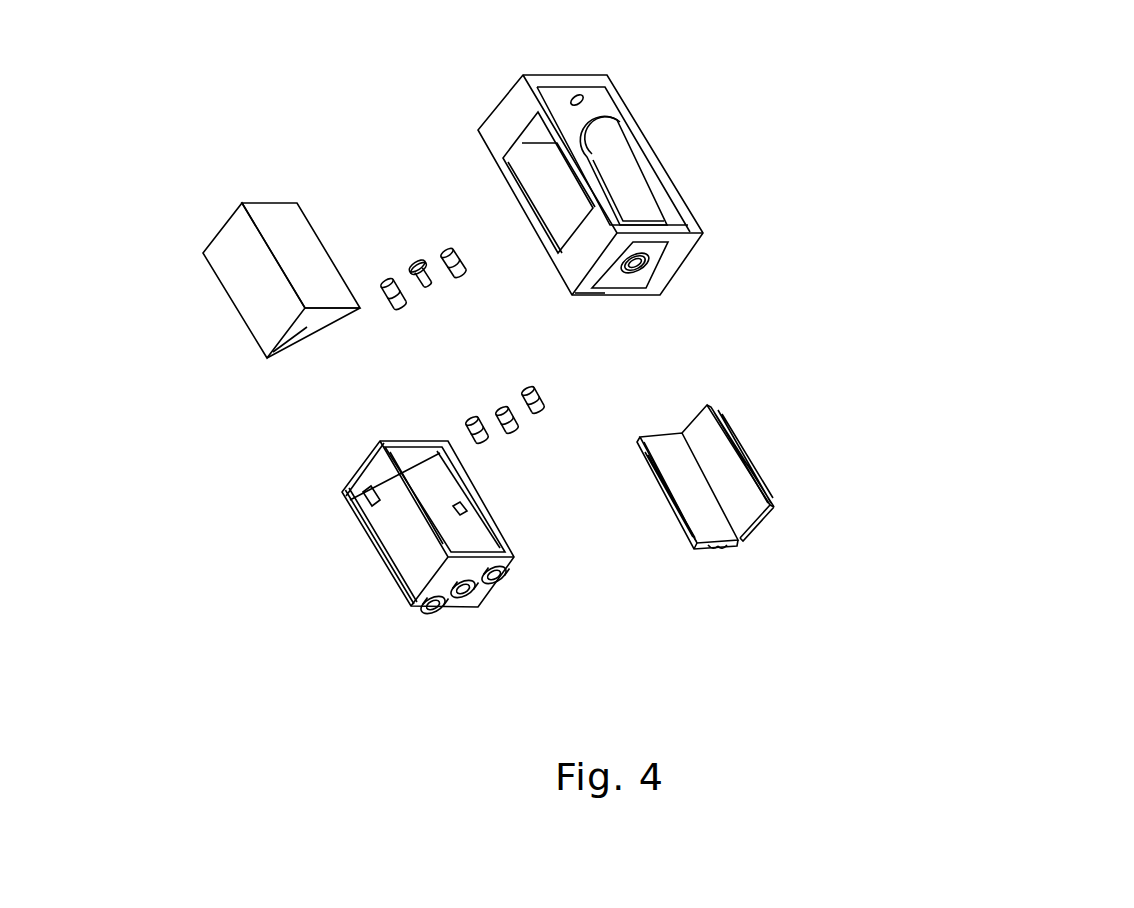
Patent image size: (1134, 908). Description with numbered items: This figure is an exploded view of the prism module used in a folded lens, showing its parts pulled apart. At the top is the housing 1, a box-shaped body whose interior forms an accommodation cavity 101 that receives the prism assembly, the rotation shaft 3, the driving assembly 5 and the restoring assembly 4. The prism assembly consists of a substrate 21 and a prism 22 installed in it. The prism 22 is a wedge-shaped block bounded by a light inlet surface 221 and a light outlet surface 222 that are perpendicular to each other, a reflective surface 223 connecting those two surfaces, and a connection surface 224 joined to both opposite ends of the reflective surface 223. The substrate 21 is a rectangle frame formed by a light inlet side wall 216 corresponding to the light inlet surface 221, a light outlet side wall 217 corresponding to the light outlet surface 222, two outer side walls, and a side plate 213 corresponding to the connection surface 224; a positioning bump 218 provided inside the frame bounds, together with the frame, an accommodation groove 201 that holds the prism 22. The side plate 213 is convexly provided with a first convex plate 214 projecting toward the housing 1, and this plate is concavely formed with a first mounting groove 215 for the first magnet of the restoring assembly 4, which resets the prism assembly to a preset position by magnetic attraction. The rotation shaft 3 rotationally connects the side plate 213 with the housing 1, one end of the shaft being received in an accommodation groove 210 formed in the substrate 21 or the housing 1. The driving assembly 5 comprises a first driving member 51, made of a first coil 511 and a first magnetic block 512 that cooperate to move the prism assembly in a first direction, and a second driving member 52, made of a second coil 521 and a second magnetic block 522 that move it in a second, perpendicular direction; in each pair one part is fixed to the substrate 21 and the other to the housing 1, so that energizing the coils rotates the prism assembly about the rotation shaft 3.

The housing 1 is at (596, 162).
The accommodation cavity 101 is at (605, 110).
The prism 22 is at (213, 261).
The light inlet surface 221 is at (287, 240).
The light outlet surface 222 is at (250, 278).
The reflective surface 223 is at (293, 350).
The connection surface 224 is at (302, 326).
The rotation shaft 3 is at (413, 260).
The restoring assembly 4 is at (445, 247).
The substrate 21 is at (412, 548).
The accommodation groove 201 is at (383, 517).
The accommodation groove 210 is at (465, 606).
The side plate 213 is at (410, 456).
The first convex plate 214 is at (436, 620).
The first mounting groove 215 is at (500, 572).
The light inlet side wall 216 is at (402, 441).
The light outlet side wall 217 is at (370, 467).
The positioning bump 218 is at (472, 535).
The driving assembly 5 is at (812, 569).
The first driving member 51 is at (716, 568).
The first coil 511 is at (717, 547).
The first magnetic block 512 is at (720, 543).
The second driving member 52 is at (821, 514).
The second coil 521 is at (773, 490).
The second magnetic block 522 is at (814, 544).